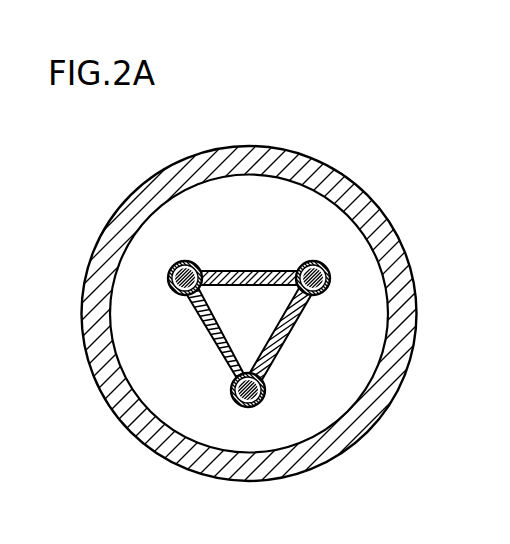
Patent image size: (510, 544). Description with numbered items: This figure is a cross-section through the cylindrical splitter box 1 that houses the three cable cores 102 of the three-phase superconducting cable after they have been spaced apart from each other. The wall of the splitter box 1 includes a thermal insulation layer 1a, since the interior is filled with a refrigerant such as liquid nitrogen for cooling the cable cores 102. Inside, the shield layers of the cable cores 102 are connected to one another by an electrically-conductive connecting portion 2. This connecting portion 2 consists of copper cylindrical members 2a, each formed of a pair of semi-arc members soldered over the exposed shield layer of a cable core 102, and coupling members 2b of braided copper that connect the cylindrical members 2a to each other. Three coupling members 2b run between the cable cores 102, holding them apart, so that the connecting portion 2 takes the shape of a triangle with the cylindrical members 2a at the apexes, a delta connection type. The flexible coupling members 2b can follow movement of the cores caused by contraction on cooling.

The splitter box 1 is at (315, 163).
The thermal insulation layer 1a is at (263, 160).
The electrically-conductive connecting portion 2 is at (251, 306).
The cylindrical member 2a is at (330, 288).
The coupling member 2b is at (255, 270).
The cable core 102 is at (330, 262).